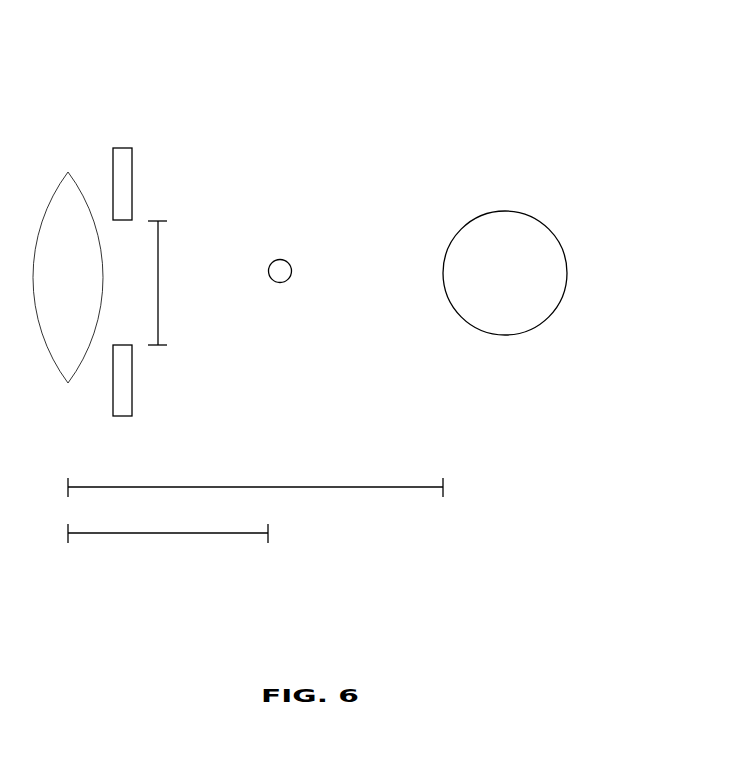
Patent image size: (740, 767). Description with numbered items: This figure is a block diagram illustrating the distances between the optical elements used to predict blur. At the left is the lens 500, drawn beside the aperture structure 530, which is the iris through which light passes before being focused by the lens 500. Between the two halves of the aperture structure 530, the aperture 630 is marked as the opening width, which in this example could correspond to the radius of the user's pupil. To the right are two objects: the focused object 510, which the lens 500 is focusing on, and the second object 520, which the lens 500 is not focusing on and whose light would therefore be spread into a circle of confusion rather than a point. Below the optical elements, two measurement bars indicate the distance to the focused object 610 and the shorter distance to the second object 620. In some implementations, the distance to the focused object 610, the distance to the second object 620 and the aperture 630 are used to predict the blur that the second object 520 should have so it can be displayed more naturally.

The lens 500 is at (50, 302).
The focused object 510 is at (488, 319).
The second object 520 is at (283, 259).
The aperture structure 530 is at (127, 147).
The distance to the focused object 610 is at (358, 487).
The distance to the second object 620 is at (247, 533).
The aperture 630 is at (158, 334).